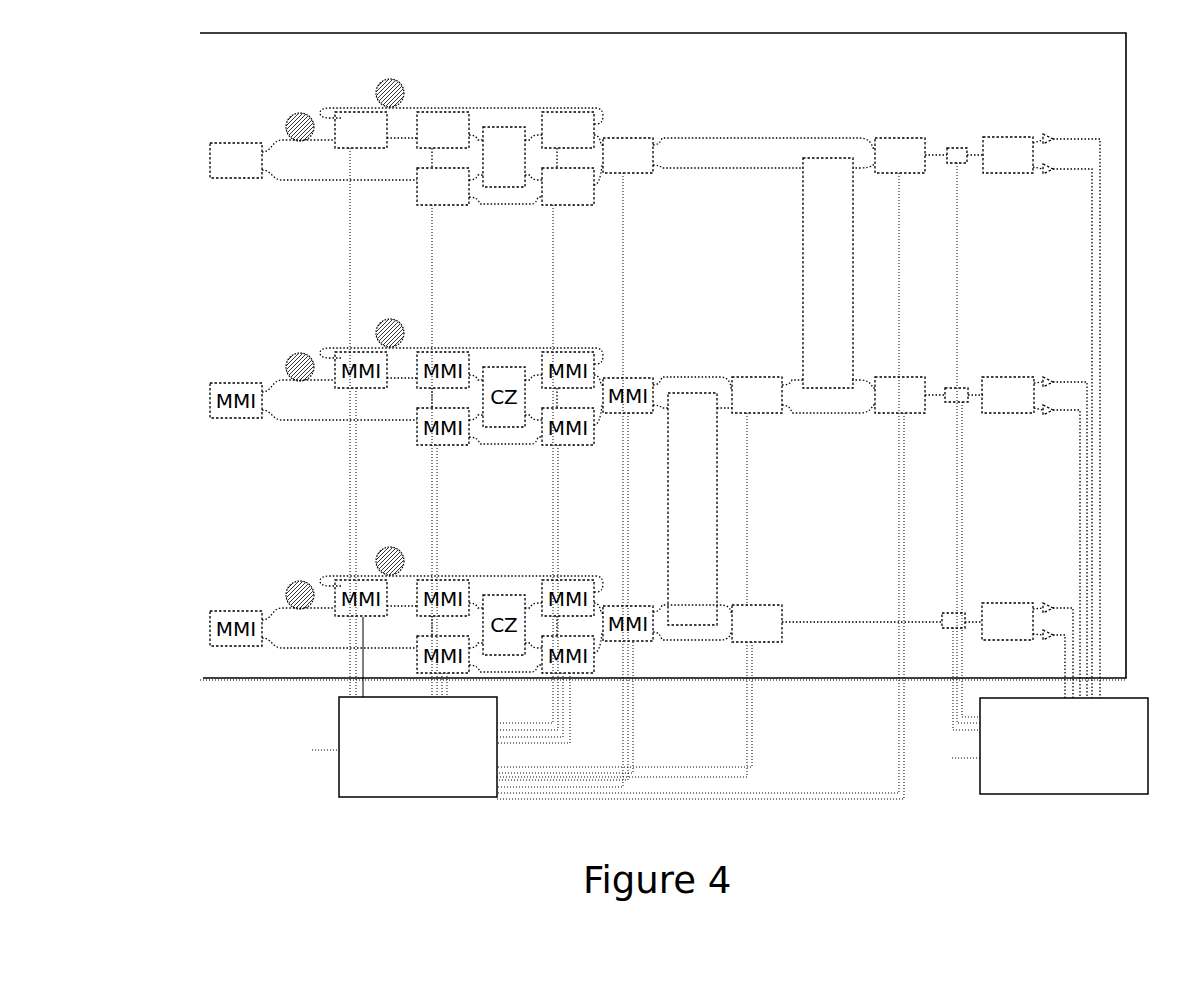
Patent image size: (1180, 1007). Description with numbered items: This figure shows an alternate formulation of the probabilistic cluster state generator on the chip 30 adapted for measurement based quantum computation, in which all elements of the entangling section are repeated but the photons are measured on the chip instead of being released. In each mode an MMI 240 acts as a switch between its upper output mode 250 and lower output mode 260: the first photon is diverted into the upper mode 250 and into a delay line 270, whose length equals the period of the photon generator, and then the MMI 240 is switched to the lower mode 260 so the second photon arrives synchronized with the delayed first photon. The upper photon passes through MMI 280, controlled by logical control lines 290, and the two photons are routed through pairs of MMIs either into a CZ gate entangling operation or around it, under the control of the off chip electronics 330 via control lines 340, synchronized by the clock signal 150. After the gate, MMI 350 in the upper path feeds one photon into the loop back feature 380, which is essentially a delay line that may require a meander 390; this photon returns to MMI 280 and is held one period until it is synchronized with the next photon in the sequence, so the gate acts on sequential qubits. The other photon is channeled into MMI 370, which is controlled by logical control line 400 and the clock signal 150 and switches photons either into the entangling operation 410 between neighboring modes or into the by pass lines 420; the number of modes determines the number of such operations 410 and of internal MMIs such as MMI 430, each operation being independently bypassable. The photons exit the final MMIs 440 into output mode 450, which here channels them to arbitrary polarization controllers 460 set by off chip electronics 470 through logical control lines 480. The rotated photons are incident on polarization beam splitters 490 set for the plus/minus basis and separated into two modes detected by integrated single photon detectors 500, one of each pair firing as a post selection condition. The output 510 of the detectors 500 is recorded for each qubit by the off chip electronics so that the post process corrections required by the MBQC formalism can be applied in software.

The chip 30 is at (194, 676).
The clock signal 150 is at (312, 754).
The MMI 240 is at (212, 140).
The upper output mode 250 is at (266, 138).
The lower output mode 260 is at (266, 180).
The delay line 270 is at (298, 110).
The MMI 280 is at (342, 110).
The logical control lines 290 is at (346, 672).
The off chip electronics 330 is at (336, 719).
The control lines 340 is at (578, 712).
The MMI 350 is at (564, 109).
The MMI 370 is at (622, 135).
The loop back feature 380 is at (517, 104).
The meander 390 is at (392, 78).
The logical control line 400 is at (640, 772).
The entangling operation 410 is at (800, 268).
The by pass lines 420 is at (746, 135).
The internal MMI 430 is at (756, 375).
The final MMI 440 is at (898, 135).
The output mode 450 is at (937, 148).
The polarization controller 460 is at (956, 145).
The off chip electronics 470 is at (1122, 696).
The logical control lines 480 is at (958, 694).
The polarization beam splitter 490 is at (1008, 135).
The single photon detector 500 is at (1047, 132).
The output 510 is at (1068, 602).